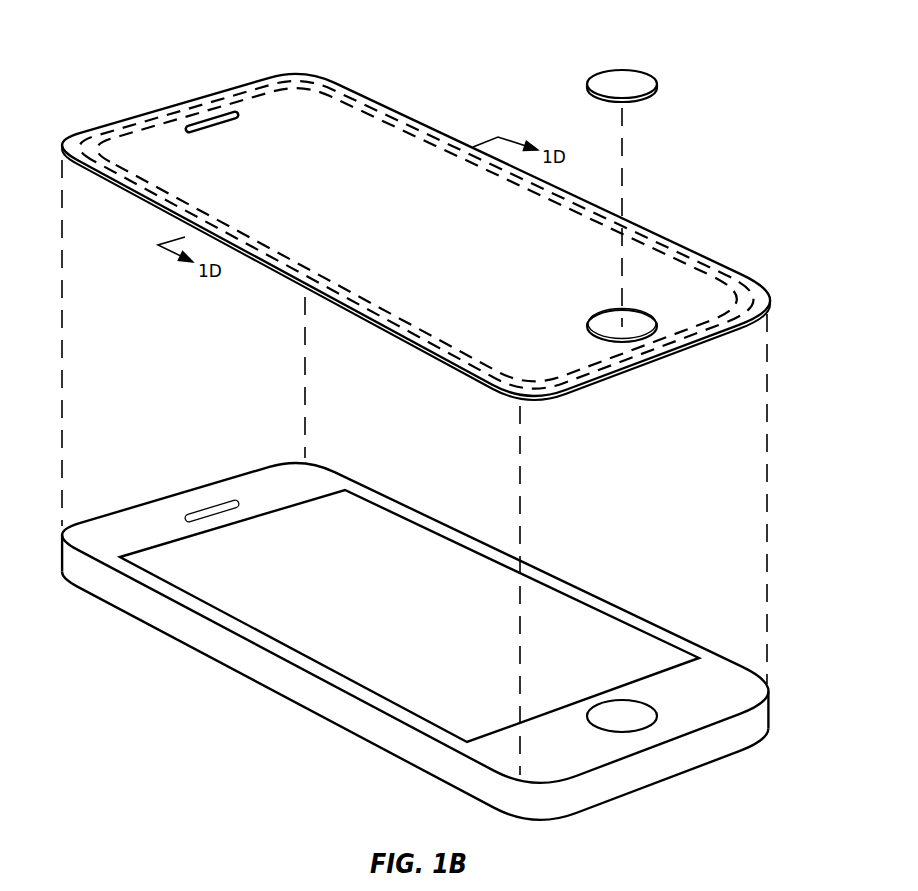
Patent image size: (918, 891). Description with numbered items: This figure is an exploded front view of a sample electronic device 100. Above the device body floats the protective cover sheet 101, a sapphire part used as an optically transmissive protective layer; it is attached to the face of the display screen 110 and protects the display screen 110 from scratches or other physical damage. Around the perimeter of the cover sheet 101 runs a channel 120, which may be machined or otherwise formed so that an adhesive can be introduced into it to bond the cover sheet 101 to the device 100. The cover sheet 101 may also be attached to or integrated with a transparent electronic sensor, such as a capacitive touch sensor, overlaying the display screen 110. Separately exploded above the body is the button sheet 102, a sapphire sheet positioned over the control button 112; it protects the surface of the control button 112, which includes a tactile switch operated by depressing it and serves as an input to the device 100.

The device 100 is at (172, 496).
The protective cover sheet 101 is at (192, 100).
The button sheet 102 is at (620, 70).
The display screen 110 is at (445, 537).
The control button 112 is at (648, 724).
The channel 120 is at (270, 82).